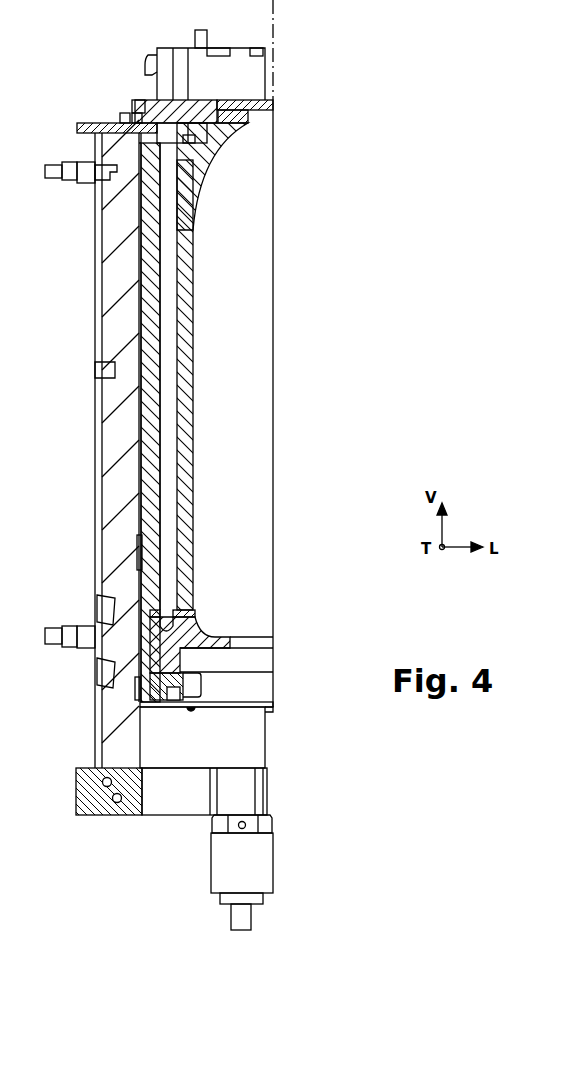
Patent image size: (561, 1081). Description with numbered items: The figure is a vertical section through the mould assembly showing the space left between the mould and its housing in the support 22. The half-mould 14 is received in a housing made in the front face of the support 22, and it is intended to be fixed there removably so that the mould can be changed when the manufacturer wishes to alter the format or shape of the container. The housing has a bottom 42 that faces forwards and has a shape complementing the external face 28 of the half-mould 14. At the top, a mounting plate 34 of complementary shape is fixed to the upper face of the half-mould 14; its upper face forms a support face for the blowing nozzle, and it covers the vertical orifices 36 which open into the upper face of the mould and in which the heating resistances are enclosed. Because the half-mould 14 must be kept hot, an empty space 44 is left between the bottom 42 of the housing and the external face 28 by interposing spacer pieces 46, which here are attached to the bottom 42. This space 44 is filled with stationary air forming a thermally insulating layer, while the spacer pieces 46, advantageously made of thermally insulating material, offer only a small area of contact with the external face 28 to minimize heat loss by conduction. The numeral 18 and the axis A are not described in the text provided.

The half-mould 14 is at (185, 242).
The interior chamber 18 is at (226, 390).
The support 22 is at (122, 272).
The external face 28 is at (140, 230).
The mounting plate 34 is at (215, 112).
The vertical orifices 36 is at (99, 126).
The bottom 42 is at (150, 313).
The empty space 44 is at (140, 182).
The spacer pieces 46 is at (117, 170).
The axis A is at (275, 20).